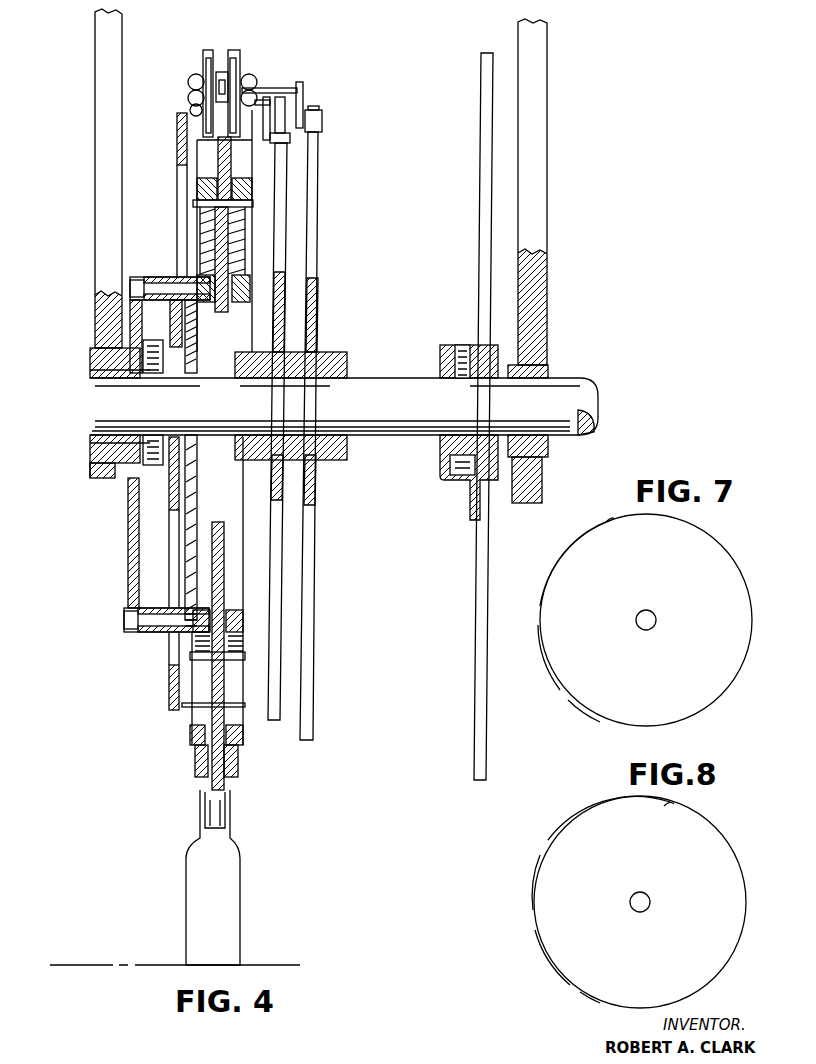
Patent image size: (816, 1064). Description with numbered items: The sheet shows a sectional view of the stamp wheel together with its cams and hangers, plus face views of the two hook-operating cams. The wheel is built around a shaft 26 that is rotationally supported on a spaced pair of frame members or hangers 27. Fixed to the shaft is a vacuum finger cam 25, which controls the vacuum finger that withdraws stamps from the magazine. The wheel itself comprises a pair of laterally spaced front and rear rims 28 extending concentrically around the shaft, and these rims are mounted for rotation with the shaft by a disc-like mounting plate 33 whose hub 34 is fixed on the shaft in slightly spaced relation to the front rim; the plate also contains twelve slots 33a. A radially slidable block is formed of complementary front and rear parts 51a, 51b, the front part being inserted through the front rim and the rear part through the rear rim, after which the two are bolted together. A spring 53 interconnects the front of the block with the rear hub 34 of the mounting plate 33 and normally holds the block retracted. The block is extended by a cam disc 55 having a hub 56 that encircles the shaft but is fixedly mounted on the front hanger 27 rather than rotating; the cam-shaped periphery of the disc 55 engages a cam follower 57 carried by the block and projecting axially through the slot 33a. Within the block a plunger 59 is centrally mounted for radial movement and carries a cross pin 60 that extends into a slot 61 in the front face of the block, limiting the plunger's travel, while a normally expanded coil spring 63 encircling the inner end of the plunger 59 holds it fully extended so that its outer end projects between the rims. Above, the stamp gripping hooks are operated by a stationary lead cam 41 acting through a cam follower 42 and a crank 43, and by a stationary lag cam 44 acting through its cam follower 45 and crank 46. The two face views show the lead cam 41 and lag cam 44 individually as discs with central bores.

In FIG. 4, the shaft 26 is at (447, 409).
In FIG. 4, the hangers 27 is at (558, 224).
In FIG. 4, the hub 56 is at (104, 362).
In FIG. 4, the cam follower 57 is at (138, 278).
In FIG. 4, the hub 34 is at (150, 348).
In FIG. 4, the cam disc 55 is at (134, 544).
In FIG. 4, the spring 53 is at (197, 336).
In FIG. 4, the mounting plate 33 is at (177, 120).
In FIG. 4, the slots 33a is at (172, 645).
In FIG. 4, the rims 28 is at (242, 146).
In FIG. 4, the plunger 59 is at (222, 155).
In FIG. 4, the cross pin 60 is at (200, 203).
In FIG. 4, the coil spring 63 is at (208, 226).
In FIG. 4, the front part of block 51a is at (190, 733).
In FIG. 4, the rear part of block 51b is at (243, 618).
In FIG. 4, the slot 61 is at (190, 716).
In FIG. 4, the crank 43 is at (266, 100).
In FIG. 4, the crank 46 is at (303, 92).
In FIG. 4, the cam follower 45 is at (319, 130).
In FIG. 4, the cam follower 42 is at (283, 146).
In FIG. 4, the stationary lead cam 41 is at (284, 198).
In FIG. 7, the stationary lead cam 41 is at (676, 662).
In FIG. 4, the stationary lag cam 44 is at (316, 312).
In FIG. 8, the stationary lag cam 44 is at (685, 955).
In FIG. 4, the vacuum finger cam 25 is at (486, 128).